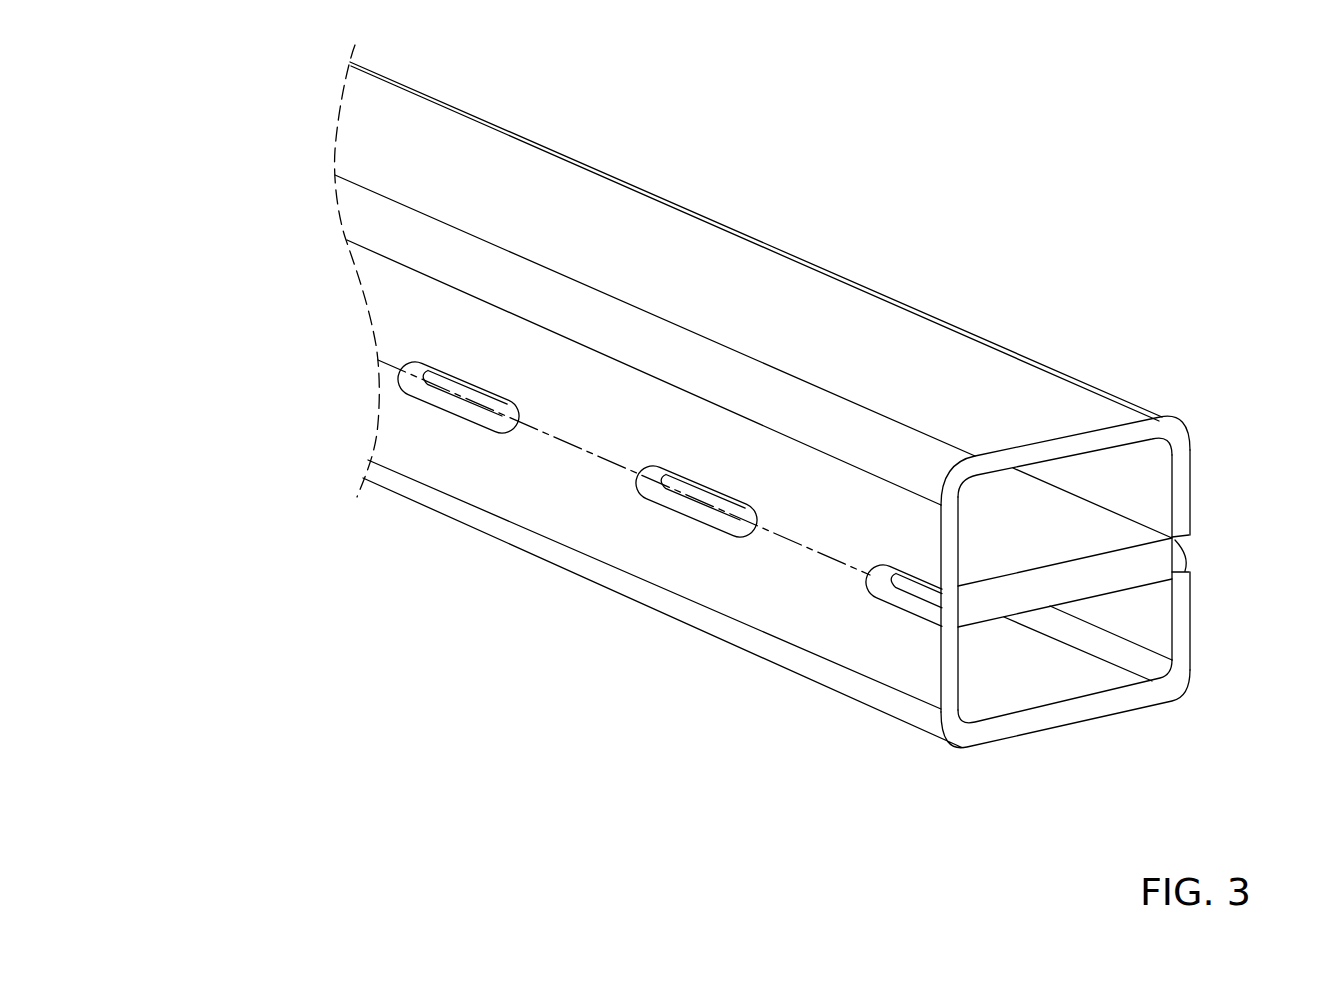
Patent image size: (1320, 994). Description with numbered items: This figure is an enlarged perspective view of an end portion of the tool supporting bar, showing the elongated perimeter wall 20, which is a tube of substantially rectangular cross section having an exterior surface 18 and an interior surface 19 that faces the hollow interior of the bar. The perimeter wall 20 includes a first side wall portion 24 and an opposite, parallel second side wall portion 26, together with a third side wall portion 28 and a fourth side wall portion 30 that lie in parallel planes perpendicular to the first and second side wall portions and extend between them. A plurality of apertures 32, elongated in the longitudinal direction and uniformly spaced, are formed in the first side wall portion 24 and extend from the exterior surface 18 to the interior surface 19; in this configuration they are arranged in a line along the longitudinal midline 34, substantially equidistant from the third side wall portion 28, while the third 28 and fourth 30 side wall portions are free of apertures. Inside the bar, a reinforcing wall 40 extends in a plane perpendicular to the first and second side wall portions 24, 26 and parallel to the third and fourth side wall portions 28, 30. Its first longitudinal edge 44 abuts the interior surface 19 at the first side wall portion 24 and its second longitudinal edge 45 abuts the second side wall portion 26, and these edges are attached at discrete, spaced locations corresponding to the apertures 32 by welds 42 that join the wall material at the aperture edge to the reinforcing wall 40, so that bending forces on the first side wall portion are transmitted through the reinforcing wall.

The exterior surface 18 is at (749, 259).
The interior surface 19 is at (1132, 699).
The perimeter wall 20 is at (1245, 479).
The first side wall portion 24 is at (644, 493).
The second side wall portion 26 is at (1242, 562).
The third side wall portion 28 is at (1094, 408).
The fourth side wall portion 30 is at (776, 653).
The apertures 32 is at (808, 569).
The longitudinal midline 34 is at (624, 500).
The reinforcing wall 40 is at (1135, 498).
The welds 42 is at (875, 686).
The first longitudinal edge 44 is at (963, 669).
The second longitudinal edge 45 is at (1242, 524).